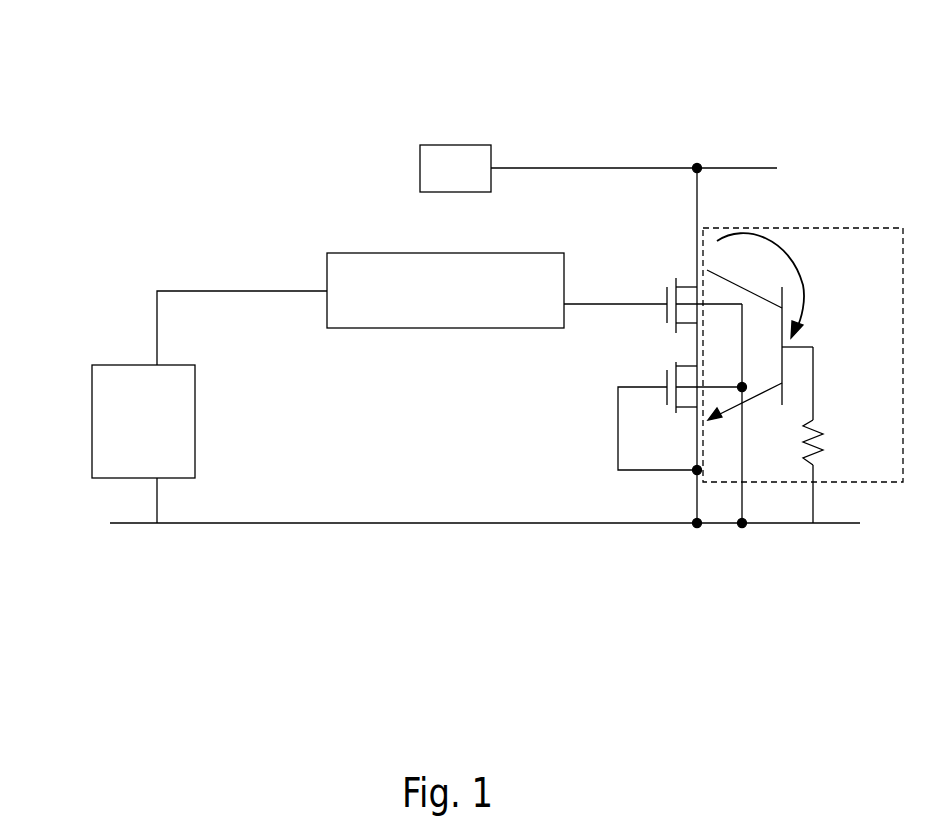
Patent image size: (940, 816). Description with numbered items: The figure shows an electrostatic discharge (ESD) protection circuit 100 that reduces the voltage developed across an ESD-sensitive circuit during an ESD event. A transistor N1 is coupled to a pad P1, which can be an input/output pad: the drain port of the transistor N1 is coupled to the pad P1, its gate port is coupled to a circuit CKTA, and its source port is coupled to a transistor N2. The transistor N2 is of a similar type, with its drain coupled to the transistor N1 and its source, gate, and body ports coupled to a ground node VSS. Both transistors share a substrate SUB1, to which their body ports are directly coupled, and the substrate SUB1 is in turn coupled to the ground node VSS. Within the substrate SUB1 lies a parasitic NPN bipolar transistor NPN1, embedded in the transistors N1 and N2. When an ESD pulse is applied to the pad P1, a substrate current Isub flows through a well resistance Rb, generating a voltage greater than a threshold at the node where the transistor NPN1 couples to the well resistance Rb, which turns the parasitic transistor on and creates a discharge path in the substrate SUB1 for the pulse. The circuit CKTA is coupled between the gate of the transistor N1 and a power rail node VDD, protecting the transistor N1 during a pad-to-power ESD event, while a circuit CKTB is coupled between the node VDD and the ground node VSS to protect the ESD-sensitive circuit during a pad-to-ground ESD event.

The ESD protection circuit 100 is at (845, 53).
The pad P1 is at (455, 168).
The circuit CKTA is at (445, 290).
The circuit CKTB is at (143, 421).
The node VDD is at (226, 312).
The ground node VSS is at (485, 518).
The transistor N1 is at (701, 290).
The transistor N2 is at (680, 416).
The substrate SUB1 is at (868, 228).
The parasitic NPN bipolar transistor NPN1 is at (801, 345).
The well resistance Rb is at (834, 435).
The substrate current Isub is at (787, 285).